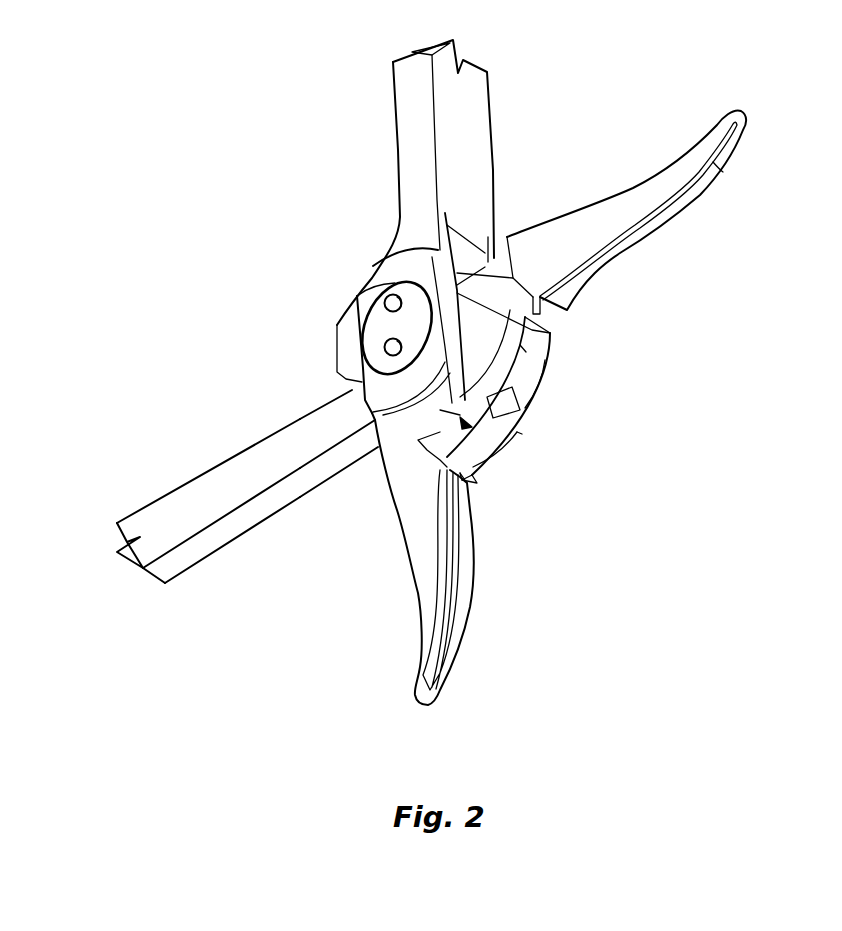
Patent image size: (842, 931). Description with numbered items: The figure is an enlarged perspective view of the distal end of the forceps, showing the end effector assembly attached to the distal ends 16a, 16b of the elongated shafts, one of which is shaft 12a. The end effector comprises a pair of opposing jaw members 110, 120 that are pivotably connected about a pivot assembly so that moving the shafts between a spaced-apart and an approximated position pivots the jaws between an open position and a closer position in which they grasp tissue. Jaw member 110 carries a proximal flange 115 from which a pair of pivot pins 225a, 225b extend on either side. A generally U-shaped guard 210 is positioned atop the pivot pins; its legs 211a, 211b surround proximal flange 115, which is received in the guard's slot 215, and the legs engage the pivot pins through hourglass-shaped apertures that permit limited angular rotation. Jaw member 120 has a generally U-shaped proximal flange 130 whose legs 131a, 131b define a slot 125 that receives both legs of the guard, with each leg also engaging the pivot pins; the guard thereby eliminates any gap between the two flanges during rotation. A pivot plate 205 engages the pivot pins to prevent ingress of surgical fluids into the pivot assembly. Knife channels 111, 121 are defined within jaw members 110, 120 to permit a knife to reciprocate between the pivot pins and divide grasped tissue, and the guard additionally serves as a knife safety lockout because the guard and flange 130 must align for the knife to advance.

The elongated shaft 12a is at (232, 526).
The distal end 16a is at (350, 430).
The distal end 16b is at (478, 143).
The jaw member 110 is at (651, 210).
The knife channel 111 is at (717, 173).
The proximal flange 115 is at (543, 319).
The jaw member 120 is at (456, 559).
The knife channel 121 is at (449, 651).
The slot 125 is at (458, 452).
The proximal flange 130 is at (406, 262).
The leg 131a is at (463, 475).
The leg 131b is at (516, 441).
The pivot plate 205 is at (366, 334).
The guard 210 is at (541, 388).
The leg 211a is at (490, 392).
The leg 211b is at (545, 362).
The slot 215 is at (523, 350).
The pivot pin 225a is at (386, 305).
The pivot pin 225b is at (386, 349).